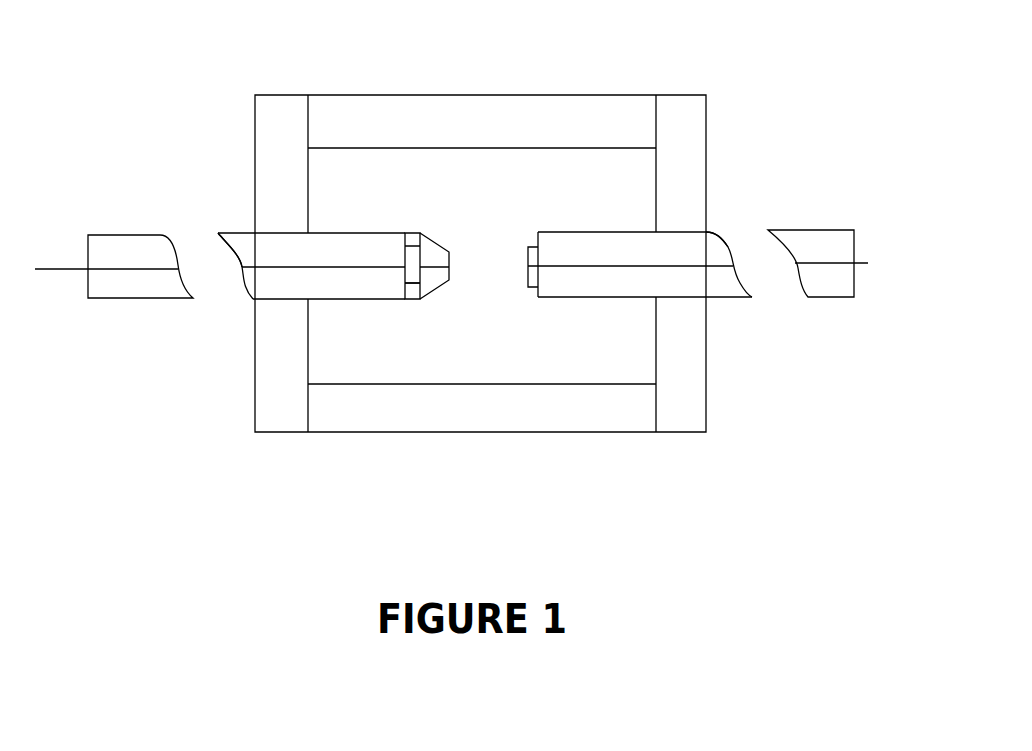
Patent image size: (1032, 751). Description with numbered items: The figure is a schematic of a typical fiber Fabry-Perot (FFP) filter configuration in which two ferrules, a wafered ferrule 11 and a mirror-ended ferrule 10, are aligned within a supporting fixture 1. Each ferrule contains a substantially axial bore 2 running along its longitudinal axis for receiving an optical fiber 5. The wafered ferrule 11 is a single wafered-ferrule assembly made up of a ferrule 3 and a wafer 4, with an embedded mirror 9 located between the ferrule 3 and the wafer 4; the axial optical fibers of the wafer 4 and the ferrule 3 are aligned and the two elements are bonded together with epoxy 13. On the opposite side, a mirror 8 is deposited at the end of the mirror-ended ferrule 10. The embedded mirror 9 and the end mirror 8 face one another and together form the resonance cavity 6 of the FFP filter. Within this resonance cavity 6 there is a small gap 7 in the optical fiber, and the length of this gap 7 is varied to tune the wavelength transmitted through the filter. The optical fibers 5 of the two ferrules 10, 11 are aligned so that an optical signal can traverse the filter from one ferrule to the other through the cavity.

The supporting fixture 1 is at (687, 82).
The axial bore 2 is at (371, 276).
The ferrule 3 is at (145, 298).
The wafer 4 is at (434, 258).
The optical fiber 5 is at (58, 269).
The resonance cavity 6 is at (418, 358).
The gap in the optical fiber 7 is at (527, 228).
The mirror 8 is at (531, 277).
The embedded mirror 9 is at (420, 282).
The mirror-ended ferrule 10 is at (695, 251).
The wafered ferrule 11 is at (256, 250).
The epoxy 13 is at (410, 235).